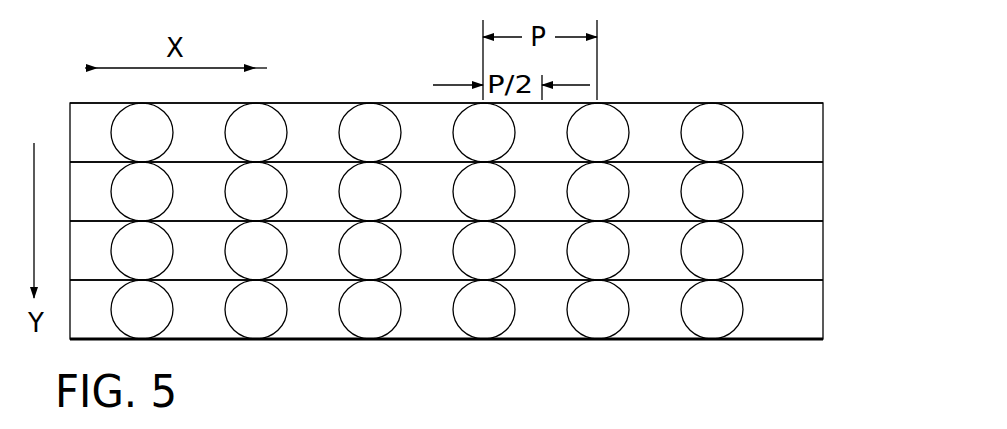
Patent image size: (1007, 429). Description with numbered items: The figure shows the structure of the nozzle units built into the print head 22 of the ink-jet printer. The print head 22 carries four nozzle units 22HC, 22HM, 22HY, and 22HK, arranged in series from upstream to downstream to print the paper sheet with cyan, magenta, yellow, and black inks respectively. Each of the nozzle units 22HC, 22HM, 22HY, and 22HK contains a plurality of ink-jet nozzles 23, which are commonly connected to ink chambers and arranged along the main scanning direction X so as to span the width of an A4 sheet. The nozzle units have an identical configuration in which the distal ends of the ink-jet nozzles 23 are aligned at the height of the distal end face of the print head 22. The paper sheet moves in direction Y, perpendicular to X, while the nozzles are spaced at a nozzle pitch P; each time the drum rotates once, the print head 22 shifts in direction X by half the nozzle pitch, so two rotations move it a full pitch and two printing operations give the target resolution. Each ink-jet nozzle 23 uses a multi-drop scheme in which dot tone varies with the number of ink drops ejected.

The print head 22 is at (834, 88).
The nozzle unit for black ink 22HK is at (812, 133).
The nozzle unit for yellow ink 22HY is at (812, 192).
The nozzle unit for magenta ink 22HM is at (812, 256).
The nozzle unit for cyan ink 22HC is at (812, 315).
The ink-jet nozzle 23 is at (690, 187).